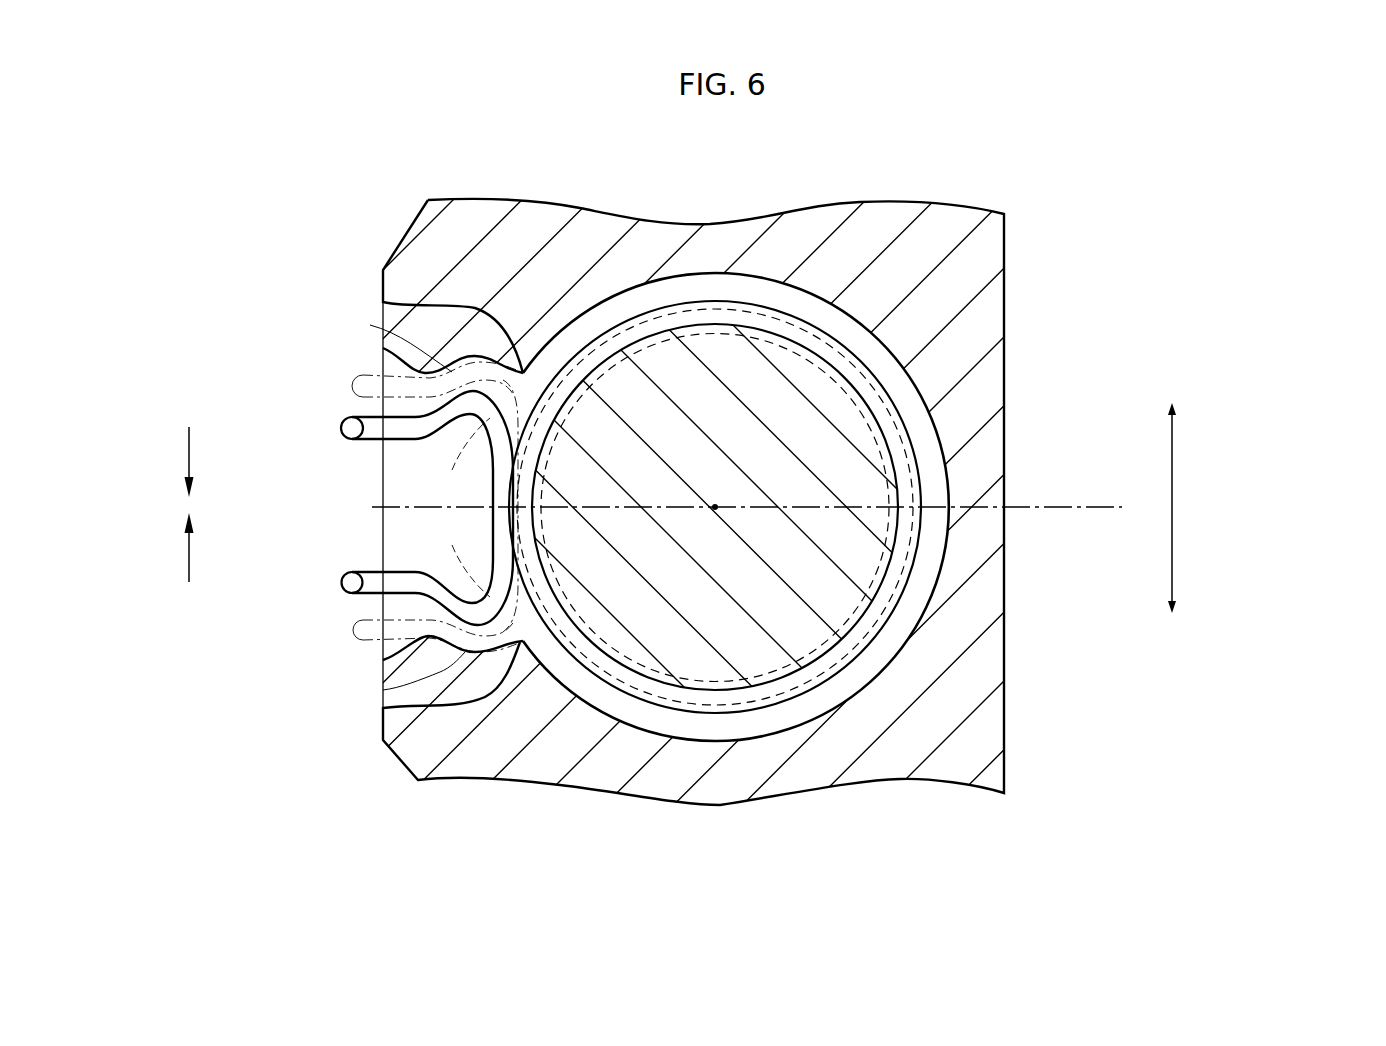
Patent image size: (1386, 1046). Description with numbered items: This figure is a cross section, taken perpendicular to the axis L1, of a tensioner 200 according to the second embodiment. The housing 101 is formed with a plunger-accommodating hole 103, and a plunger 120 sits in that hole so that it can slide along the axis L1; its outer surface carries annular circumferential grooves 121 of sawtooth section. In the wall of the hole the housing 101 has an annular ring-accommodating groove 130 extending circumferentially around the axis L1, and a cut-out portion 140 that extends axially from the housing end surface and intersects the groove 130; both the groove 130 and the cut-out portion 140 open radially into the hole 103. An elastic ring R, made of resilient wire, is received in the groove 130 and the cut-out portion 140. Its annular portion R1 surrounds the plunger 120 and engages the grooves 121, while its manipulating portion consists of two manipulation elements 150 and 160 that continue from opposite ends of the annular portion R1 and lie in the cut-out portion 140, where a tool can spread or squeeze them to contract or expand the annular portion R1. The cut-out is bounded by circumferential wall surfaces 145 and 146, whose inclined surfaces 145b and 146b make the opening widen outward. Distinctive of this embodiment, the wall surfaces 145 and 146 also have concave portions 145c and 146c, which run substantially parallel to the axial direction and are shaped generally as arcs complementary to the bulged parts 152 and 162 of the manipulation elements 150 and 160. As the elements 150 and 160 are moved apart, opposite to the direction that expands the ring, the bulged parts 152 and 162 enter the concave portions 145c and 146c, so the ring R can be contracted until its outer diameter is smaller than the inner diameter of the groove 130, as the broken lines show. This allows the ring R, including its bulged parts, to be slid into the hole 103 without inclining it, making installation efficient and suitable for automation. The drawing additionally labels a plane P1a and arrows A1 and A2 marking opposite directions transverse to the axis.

The holding structure 200 is at (693, 496).
The housing 101 is at (888, 750).
The plunger-accommodating hole 103 is at (770, 697).
The plunger 120 is at (873, 570).
The annular circumferential grooves 121 is at (712, 318).
The ring-accommodating groove 130 is at (805, 300).
The cut-out portion 140 is at (400, 528).
The circumferential wall surface 145 is at (535, 632).
The inclined surface 145b is at (400, 641).
The concave portion 145c is at (383, 690).
The circumferential wall surface 146 is at (533, 379).
The inclined surface 146b is at (400, 372).
The concave portion 146c is at (370, 325).
The manipulation element 150 is at (328, 582).
The bulged part 152 is at (453, 592).
The manipulation element 160 is at (330, 429).
The bulged part 162 is at (438, 422).
The elastic ring R is at (683, 672).
The annular portion R1 is at (917, 485).
The axial line L1 is at (715, 504).
The plane P1a is at (1075, 507).
The direction A1 is at (189, 552).
The direction A2 is at (189, 455).